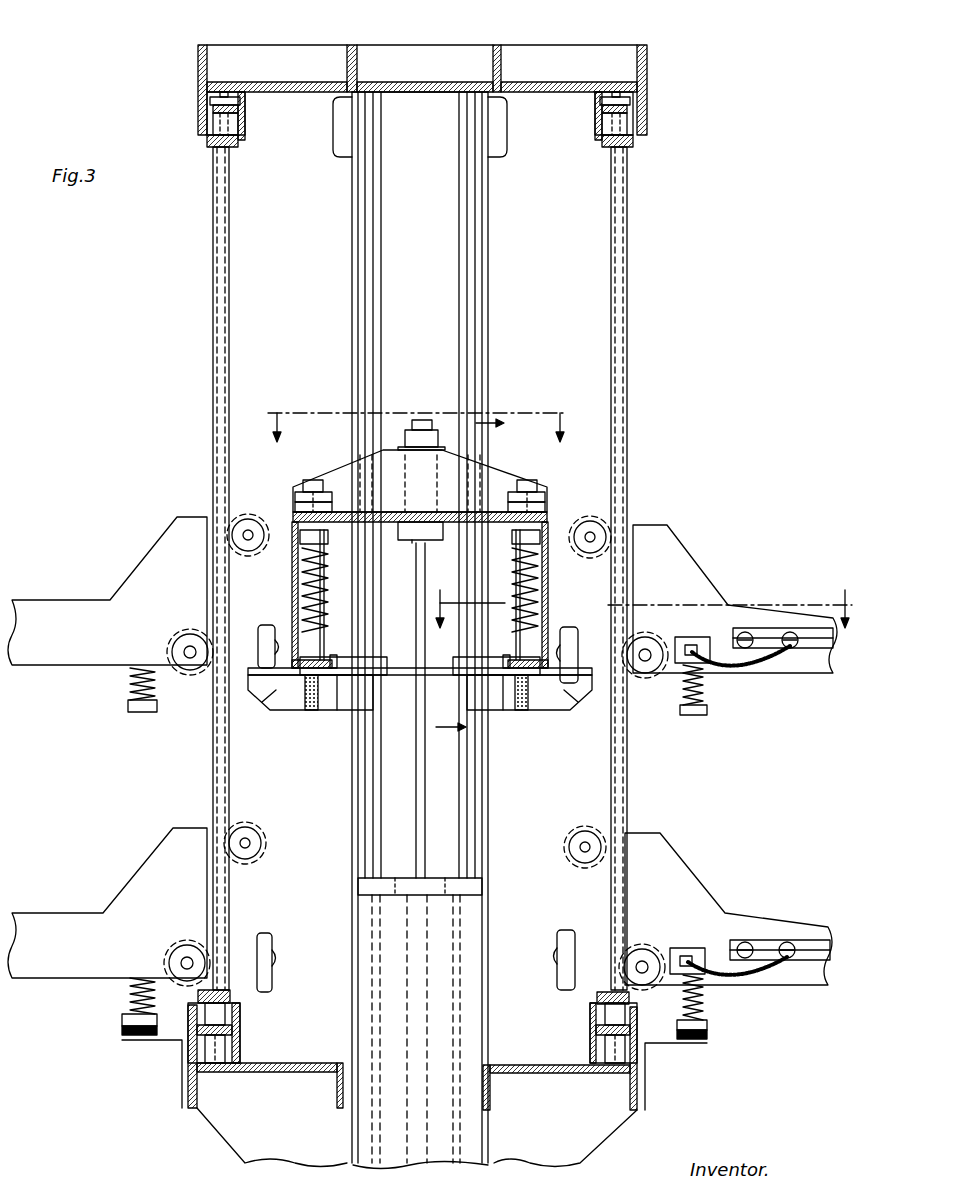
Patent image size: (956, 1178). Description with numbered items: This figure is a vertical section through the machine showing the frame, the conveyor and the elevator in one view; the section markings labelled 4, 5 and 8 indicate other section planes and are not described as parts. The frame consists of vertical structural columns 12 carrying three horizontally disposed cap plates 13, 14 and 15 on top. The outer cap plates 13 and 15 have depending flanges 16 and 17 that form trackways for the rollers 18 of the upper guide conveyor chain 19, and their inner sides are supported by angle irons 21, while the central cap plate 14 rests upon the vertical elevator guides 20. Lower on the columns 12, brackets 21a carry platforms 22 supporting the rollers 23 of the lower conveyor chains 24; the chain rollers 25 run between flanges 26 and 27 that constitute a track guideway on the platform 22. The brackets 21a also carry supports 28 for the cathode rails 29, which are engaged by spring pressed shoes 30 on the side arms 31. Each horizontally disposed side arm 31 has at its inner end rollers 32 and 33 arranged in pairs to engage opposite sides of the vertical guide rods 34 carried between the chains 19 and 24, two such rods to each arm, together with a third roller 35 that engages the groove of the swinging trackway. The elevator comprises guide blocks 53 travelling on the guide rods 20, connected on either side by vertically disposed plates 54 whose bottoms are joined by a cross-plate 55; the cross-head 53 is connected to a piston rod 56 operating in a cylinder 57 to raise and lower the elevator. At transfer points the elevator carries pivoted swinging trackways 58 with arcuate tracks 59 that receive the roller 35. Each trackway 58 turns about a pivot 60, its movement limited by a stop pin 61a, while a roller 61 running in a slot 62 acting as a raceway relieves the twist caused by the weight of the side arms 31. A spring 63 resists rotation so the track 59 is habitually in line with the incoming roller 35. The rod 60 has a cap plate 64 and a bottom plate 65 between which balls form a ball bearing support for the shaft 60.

The center rod 4 is at (632, 710).
The section line 5 is at (482, 586).
The section line 8 is at (642, 596).
The vertical structural column 12 is at (352, 212).
The cap plate 13 is at (305, 85).
The central cap plate 14 is at (425, 85).
The cap plate 15 is at (560, 85).
The depending flange 16 is at (206, 100).
The depending flange 17 is at (243, 133).
The roller 18 is at (215, 127).
The upper guide conveyor chain 19 is at (238, 108).
The vertical elevator guide 20 is at (468, 186).
The angle iron 21 is at (346, 103).
The bracket 21a is at (270, 1142).
The platform 22 is at (312, 1063).
The roller 23 is at (215, 1064).
The lower conveyor chain 24 is at (236, 1042).
The roller 25 is at (232, 1000).
The flange 26 is at (240, 1022).
The flange 27 is at (190, 1026).
The support 28 is at (164, 1048).
The cathode rail 29 is at (122, 1031).
The spring pressed shoe 30 is at (128, 706).
The side arm 31 is at (152, 572).
The roller 32 is at (190, 670).
The roller 33 is at (248, 514).
The vertical guide rod 34 is at (212, 286).
The roller 35 is at (264, 626).
The elevator guide block 53 is at (440, 490).
The vertically disposed plate 54 is at (545, 520).
The cross-plate 55 is at (395, 676).
The piston rod 56 is at (415, 803).
The cylinder 57 is at (440, 932).
The elevator swinging trackway 58 is at (262, 698).
The arcuate track 59 is at (284, 690).
The pivot 60 is at (297, 556).
The roller 61 is at (326, 664).
The stop pin 61a is at (336, 660).
The slot 62 is at (322, 670).
The spring 63 is at (304, 588).
The cap plate 64 is at (303, 484).
The bottom plate 65 is at (302, 530).